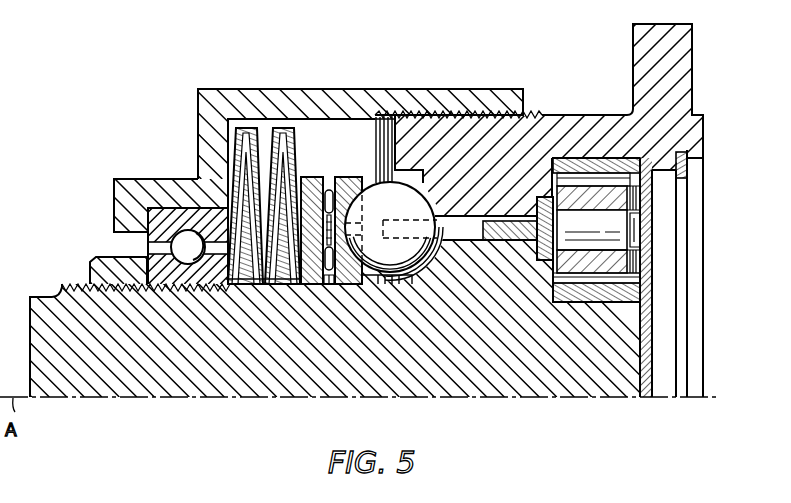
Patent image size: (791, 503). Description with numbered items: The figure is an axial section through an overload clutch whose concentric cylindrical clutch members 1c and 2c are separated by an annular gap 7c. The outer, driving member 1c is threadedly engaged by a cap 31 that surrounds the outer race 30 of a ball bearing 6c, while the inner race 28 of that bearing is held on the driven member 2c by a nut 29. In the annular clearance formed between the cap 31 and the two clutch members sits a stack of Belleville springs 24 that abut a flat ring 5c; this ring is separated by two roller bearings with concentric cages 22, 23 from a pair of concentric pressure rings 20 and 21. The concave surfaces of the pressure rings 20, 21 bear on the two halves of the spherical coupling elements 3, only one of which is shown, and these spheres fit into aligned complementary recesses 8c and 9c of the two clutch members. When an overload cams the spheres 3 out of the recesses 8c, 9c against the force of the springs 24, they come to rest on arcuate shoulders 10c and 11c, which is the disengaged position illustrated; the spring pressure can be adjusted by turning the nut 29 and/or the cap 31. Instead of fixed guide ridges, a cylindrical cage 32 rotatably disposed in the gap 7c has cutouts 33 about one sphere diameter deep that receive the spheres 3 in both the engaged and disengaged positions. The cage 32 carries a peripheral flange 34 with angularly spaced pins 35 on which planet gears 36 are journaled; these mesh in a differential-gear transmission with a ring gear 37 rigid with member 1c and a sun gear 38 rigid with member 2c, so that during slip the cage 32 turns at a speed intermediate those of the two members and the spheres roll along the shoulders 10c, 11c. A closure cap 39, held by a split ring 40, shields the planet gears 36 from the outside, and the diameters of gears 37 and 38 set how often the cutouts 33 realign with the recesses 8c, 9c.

The outer clutch member 1c is at (548, 112).
The inner clutch member 2c is at (372, 397).
The spherical coupling elements 3 is at (375, 271).
The flat ring 5c is at (311, 179).
The ball bearing 6c is at (190, 235).
The annular gap 7c is at (497, 216).
The recess 8c is at (438, 178).
The recess 9c is at (440, 280).
The arcuate shoulder 10c is at (407, 170).
The arcuate shoulder 11c is at (412, 272).
The pressure ring 20 is at (357, 179).
The pressure ring 21 is at (344, 285).
The roller bearing cage 22 is at (328, 190).
The roller bearing cage 23 is at (328, 285).
The Belleville springs 24 is at (293, 285).
The inner race 28 is at (168, 291).
The nut 29 is at (93, 257).
The outer race 30 is at (152, 210).
The cap 31 is at (213, 97).
The cylindrical cage 32 is at (506, 241).
The cutouts 33 is at (477, 216).
The peripheral flange 34 is at (540, 259).
The pins 35 is at (605, 250).
The planet gears 36 is at (572, 173).
The ring gear 37 is at (600, 158).
The sun gear 38 is at (583, 302).
The closure cap 39 is at (652, 302).
The split ring 40 is at (689, 160).